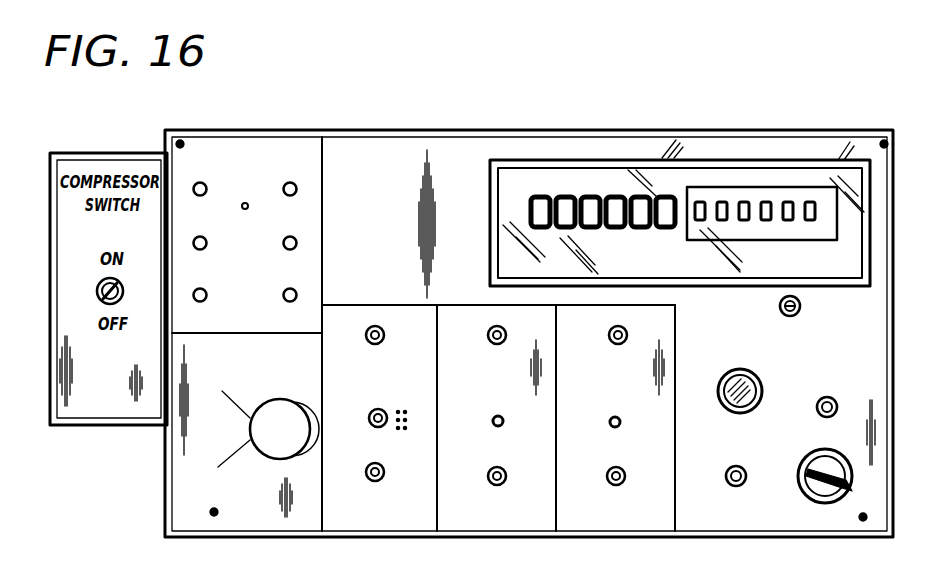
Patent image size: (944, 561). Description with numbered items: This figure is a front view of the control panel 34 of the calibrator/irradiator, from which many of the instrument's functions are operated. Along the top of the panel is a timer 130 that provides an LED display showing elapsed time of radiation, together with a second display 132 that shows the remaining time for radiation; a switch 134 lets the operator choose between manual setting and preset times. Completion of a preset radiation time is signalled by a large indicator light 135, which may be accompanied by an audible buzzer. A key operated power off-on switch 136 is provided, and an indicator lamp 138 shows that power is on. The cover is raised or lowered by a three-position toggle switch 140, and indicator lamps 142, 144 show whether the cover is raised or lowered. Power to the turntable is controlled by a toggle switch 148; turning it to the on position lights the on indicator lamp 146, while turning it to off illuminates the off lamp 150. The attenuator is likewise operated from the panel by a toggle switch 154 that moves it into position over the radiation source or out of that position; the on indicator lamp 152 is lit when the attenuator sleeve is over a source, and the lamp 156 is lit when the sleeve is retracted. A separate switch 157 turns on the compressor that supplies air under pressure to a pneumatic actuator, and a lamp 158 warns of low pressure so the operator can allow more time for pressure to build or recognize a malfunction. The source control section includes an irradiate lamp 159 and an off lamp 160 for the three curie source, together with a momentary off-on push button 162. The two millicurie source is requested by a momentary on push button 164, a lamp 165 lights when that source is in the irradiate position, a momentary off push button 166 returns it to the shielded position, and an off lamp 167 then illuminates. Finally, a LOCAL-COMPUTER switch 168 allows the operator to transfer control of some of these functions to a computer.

The control panel 34 is at (609, 122).
The timer 130 is at (591, 163).
The display 132 is at (783, 170).
The switch 134 is at (814, 324).
The indicator light 135 is at (768, 386).
The key operated power off-on switch 136 is at (802, 476).
The indicator lamp 138 is at (847, 388).
The three-position toggle switch 140 is at (357, 414).
The indicator lamp 142 is at (356, 344).
The indicator lamp 144 is at (356, 481).
The on indicator lamp 146 is at (475, 344).
The toggle switch 148 is at (474, 411).
The off lamp 150 is at (475, 472).
The on indicator lamp 152 is at (596, 344).
The toggle switch 154 is at (592, 413).
The lamp 156 is at (595, 468).
The switch 157 is at (90, 278).
The lamp 158 is at (712, 468).
The irradiate lamp 159 is at (227, 212).
The off lamp 160 is at (331, 176).
The momentary OFF-ON push button 162 is at (277, 208).
The momentary ON push button 164 is at (223, 311).
The lamp 165 is at (227, 266).
The momentary OFF push button 166 is at (331, 280).
The OFF lamp 167 is at (331, 229).
The LOCAL-COMPUTER switch 168 is at (268, 401).